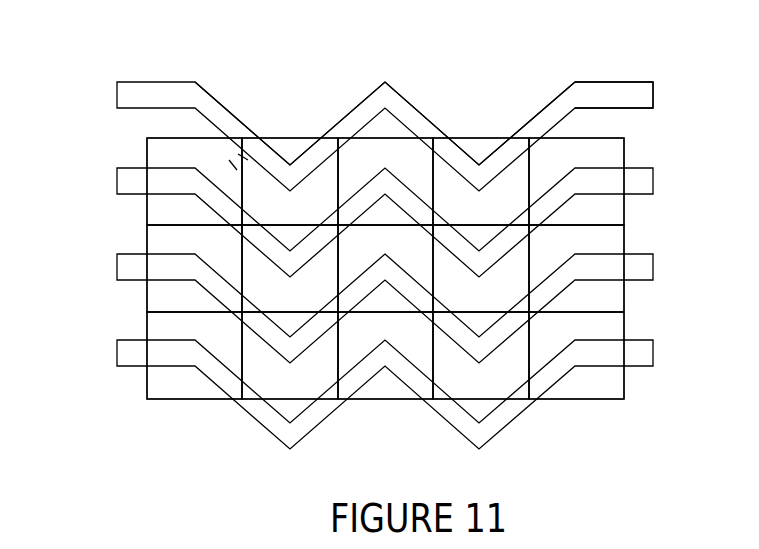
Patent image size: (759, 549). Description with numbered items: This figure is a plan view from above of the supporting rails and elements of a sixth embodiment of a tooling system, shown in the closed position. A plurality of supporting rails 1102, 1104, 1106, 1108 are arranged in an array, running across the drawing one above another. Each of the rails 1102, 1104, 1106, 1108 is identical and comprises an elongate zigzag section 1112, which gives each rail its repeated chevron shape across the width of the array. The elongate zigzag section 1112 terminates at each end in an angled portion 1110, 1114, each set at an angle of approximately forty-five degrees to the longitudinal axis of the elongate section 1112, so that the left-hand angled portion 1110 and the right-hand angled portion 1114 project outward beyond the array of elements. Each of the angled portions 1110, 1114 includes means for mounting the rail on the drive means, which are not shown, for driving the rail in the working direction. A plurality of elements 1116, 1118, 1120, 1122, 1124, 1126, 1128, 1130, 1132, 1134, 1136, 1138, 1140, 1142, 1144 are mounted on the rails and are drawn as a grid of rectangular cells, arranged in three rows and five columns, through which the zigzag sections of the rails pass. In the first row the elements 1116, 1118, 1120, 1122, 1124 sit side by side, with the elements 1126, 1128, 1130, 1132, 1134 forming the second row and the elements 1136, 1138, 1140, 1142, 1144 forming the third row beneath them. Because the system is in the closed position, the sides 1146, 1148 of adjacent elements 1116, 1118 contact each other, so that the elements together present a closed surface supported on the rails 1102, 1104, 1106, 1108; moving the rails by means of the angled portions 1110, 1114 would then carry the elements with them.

The supporting rail 1102 is at (537, 123).
The supporting rail 1104 is at (638, 177).
The supporting rail 1106 is at (640, 265).
The supporting rail 1108 is at (640, 352).
The angled portion 1110 is at (153, 94).
The elongate zigzag section 1112 is at (553, 110).
The angled portion 1114 is at (628, 88).
The element 1116 is at (213, 221).
The element 1118 is at (315, 221).
The element 1120 is at (410, 167).
The element 1122 is at (505, 214).
The element 1124 is at (602, 167).
The element 1126 is at (220, 251).
The element 1128 is at (317, 304).
The element 1130 is at (410, 254).
The element 1132 is at (505, 306).
The element 1134 is at (605, 252).
The element 1136 is at (220, 340).
The element 1138 is at (317, 390).
The element 1140 is at (410, 342).
The element 1142 is at (505, 394).
The element 1144 is at (610, 339).
The side 1146 is at (212, 160).
The side 1148 is at (262, 160).